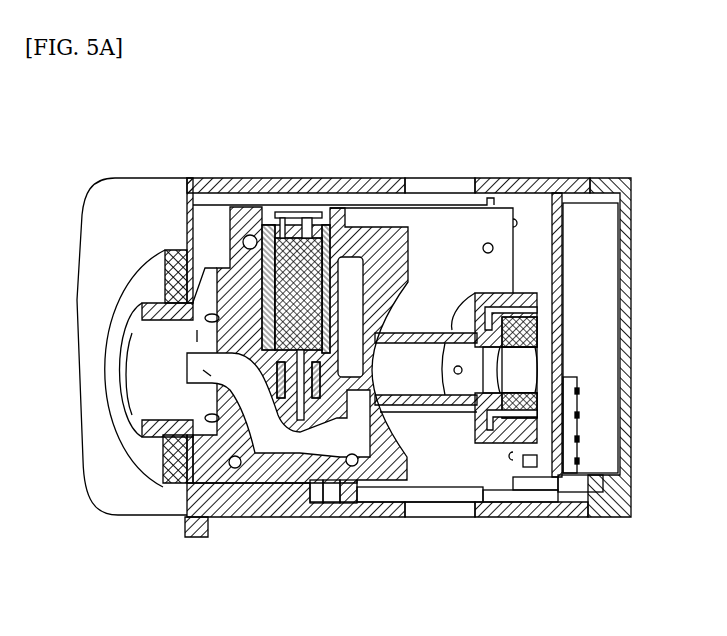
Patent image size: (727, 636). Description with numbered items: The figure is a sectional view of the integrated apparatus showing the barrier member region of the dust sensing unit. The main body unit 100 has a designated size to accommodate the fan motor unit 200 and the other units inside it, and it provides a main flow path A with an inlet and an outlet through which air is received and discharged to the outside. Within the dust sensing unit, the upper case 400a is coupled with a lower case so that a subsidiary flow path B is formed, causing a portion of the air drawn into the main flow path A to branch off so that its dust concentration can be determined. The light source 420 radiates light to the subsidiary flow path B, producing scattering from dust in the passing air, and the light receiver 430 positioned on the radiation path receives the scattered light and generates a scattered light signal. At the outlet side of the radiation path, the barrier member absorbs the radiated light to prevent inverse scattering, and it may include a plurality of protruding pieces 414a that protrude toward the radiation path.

The main body unit 100 is at (528, 185).
The fan motor unit 200 is at (523, 332).
The upper case 400a is at (240, 282).
The light source 420 is at (302, 252).
The light receiver 430 is at (257, 455).
The protruding pieces 414a is at (357, 490).
The main flow path A is at (197, 333).
The subsidiary flow path B is at (207, 373).